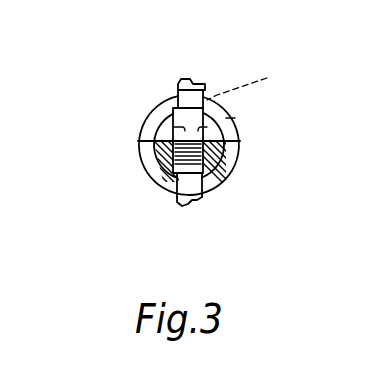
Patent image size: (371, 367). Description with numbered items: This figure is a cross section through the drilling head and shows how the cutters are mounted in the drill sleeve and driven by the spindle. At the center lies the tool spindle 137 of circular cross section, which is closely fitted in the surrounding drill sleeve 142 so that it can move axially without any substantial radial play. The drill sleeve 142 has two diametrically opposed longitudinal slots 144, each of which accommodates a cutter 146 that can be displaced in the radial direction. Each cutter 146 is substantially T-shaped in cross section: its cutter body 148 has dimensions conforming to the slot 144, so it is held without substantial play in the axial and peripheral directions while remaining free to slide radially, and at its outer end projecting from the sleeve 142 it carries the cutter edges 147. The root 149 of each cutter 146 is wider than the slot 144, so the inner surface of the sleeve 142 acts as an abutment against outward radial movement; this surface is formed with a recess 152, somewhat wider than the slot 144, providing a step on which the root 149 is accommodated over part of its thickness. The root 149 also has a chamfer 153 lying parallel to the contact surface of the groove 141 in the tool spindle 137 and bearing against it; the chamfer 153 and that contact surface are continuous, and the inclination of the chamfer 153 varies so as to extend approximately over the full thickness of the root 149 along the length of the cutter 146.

The tool spindle 137 is at (229, 150).
The groove 141 is at (155, 140).
The drill sleeve 142 is at (145, 122).
The longitudinal slots 144 is at (172, 97).
The cutter 146 is at (205, 84).
The cutter edges 147 is at (184, 78).
The cutter body 148 is at (178, 95).
The root 149 is at (162, 172).
The recess 152 is at (250, 192).
The chamfer 153 is at (235, 118).